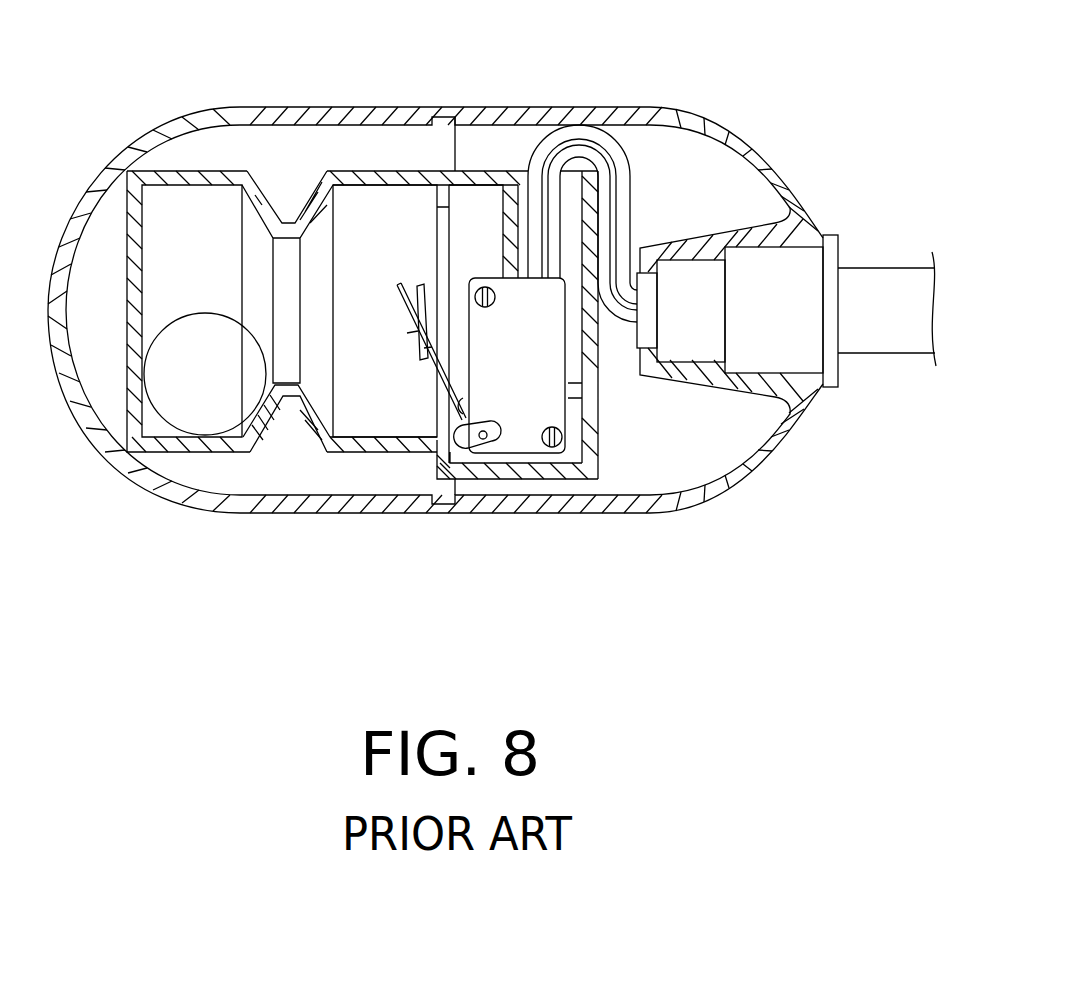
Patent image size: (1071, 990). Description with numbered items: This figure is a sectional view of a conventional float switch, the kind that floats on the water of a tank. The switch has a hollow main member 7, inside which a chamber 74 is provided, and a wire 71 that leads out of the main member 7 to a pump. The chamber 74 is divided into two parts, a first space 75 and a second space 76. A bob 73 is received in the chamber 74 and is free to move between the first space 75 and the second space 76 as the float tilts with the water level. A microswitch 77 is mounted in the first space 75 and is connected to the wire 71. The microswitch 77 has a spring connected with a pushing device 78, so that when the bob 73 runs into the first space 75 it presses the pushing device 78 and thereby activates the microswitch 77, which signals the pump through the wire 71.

The hollow main member 7 is at (488, 97).
The wire 71 is at (626, 200).
The bob 73 is at (210, 405).
The chamber 74 is at (288, 395).
The first space 75 is at (385, 197).
The second space 76 is at (165, 203).
The microswitch 77 is at (527, 433).
The pushing device 78 is at (412, 335).